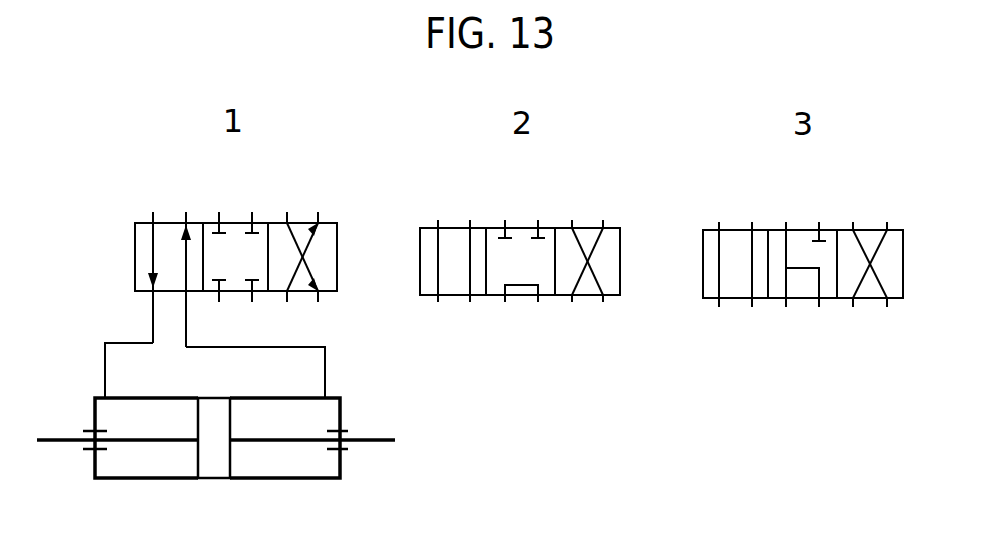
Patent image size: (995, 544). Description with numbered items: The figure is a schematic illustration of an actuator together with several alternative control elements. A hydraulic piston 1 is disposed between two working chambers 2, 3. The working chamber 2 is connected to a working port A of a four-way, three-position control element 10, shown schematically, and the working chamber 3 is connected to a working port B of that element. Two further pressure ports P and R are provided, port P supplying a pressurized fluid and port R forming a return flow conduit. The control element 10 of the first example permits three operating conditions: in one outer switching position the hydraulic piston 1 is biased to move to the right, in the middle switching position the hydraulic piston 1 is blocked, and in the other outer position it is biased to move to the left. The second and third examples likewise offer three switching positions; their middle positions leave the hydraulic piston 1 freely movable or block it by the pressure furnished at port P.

The hydraulic piston 1 is at (215, 459).
The working chamber 2 is at (148, 459).
The working chamber 3 is at (279, 460).
The 4/3-way control element 10 is at (319, 212).